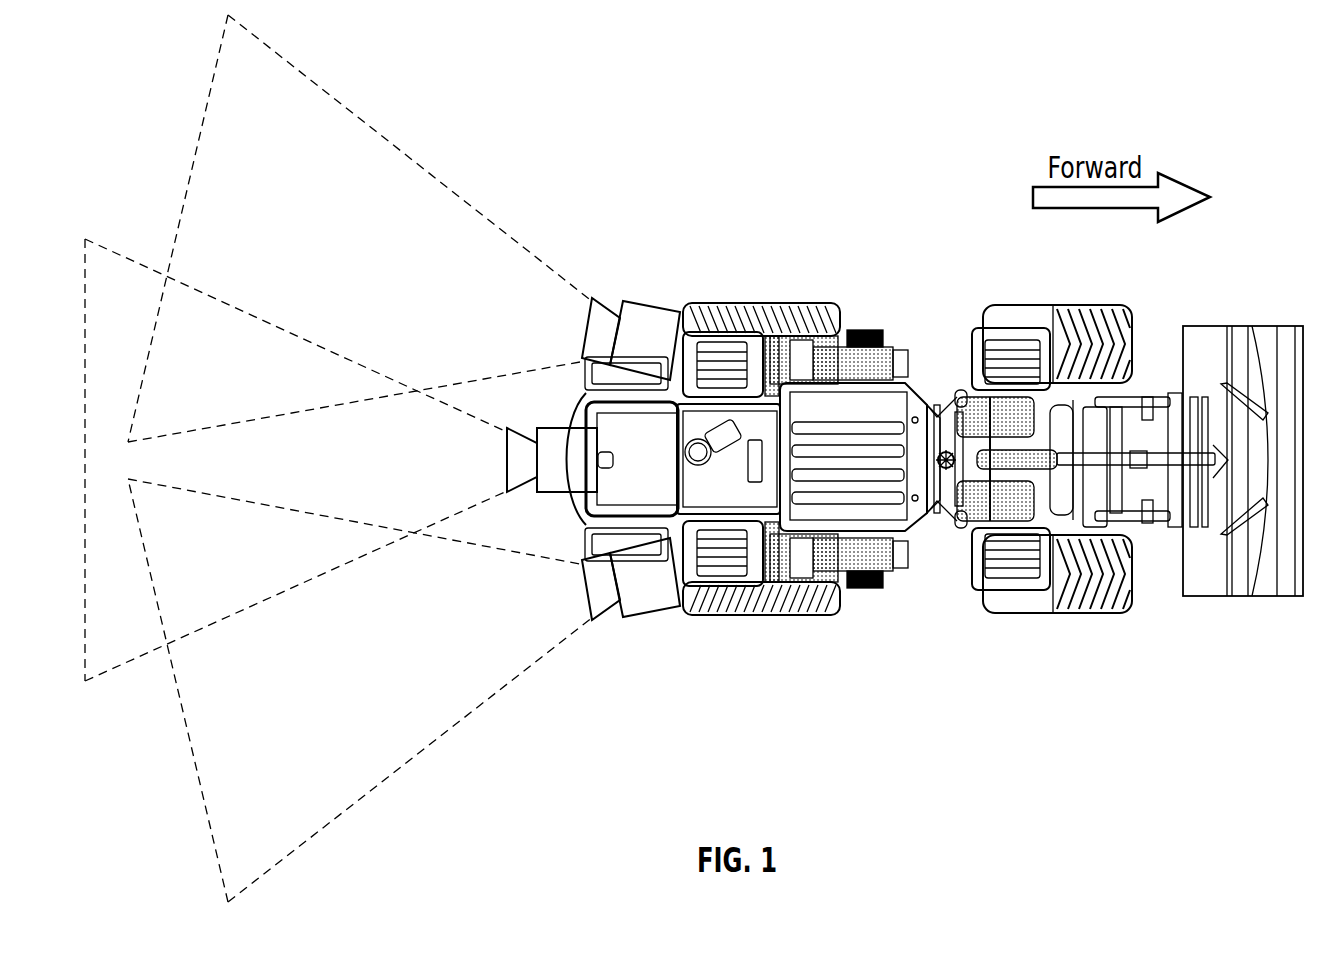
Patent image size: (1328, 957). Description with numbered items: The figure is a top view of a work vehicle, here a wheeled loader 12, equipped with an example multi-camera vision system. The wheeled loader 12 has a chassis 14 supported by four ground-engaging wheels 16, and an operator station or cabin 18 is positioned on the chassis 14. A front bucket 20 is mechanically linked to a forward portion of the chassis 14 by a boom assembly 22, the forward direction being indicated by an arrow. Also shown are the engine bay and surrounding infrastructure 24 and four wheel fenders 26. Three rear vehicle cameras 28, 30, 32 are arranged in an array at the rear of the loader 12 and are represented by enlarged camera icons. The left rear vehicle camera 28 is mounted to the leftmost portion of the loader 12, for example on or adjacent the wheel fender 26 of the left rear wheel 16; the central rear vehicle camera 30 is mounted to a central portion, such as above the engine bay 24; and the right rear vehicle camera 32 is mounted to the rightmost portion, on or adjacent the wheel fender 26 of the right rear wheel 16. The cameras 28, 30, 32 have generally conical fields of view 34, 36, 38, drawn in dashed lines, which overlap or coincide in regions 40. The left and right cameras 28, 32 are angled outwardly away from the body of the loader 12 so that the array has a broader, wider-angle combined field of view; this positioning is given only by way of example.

The wheeled loader 12 is at (1210, 777).
The chassis 14 is at (957, 513).
The ground-engaging wheels 16 is at (787, 322).
The cabin 18 is at (872, 395).
The front bucket 20 is at (1236, 345).
The boom assembly 22 is at (1112, 432).
The engine bay 24 is at (629, 475).
The wheel fenders 26 is at (710, 352).
The left rear vehicle camera 28 is at (633, 361).
The central rear vehicle camera 30 is at (553, 475).
The right rear vehicle camera 32 is at (633, 596).
The FOV 34 is at (401, 274).
The FOV 36 is at (426, 476).
The FOV 38 is at (426, 669).
The overlap regions 40 is at (177, 320).